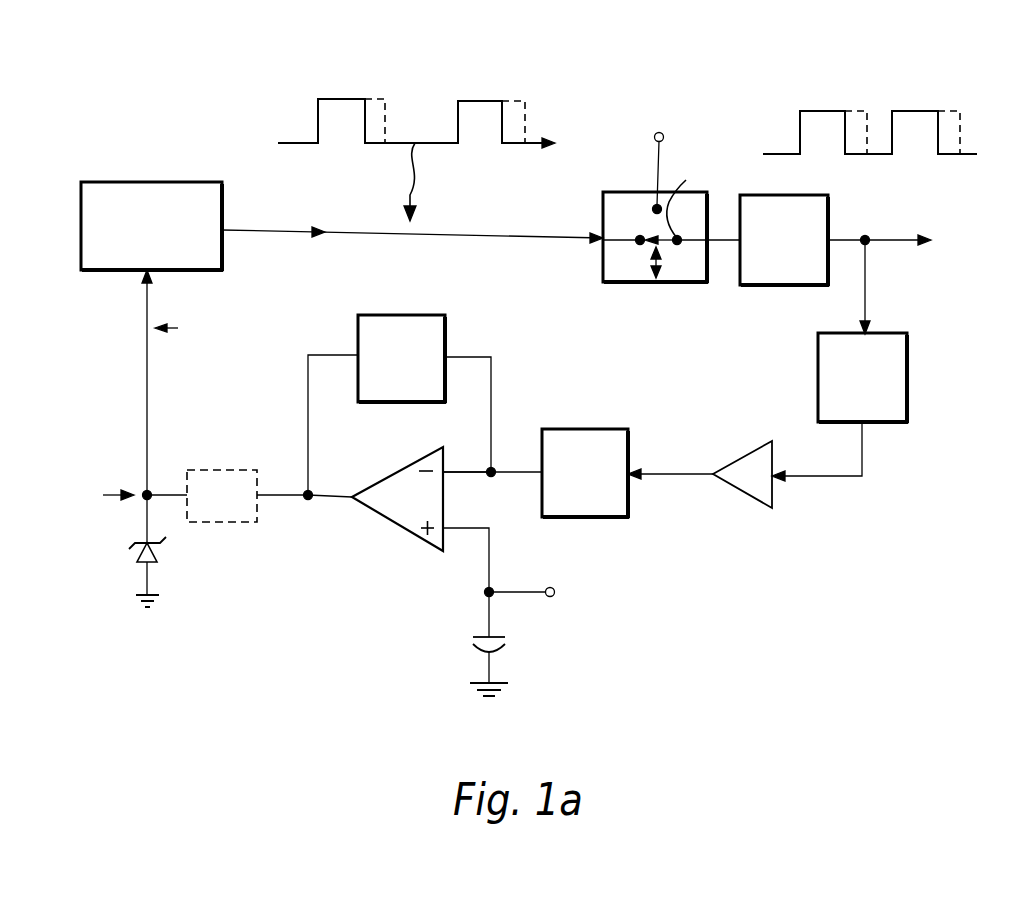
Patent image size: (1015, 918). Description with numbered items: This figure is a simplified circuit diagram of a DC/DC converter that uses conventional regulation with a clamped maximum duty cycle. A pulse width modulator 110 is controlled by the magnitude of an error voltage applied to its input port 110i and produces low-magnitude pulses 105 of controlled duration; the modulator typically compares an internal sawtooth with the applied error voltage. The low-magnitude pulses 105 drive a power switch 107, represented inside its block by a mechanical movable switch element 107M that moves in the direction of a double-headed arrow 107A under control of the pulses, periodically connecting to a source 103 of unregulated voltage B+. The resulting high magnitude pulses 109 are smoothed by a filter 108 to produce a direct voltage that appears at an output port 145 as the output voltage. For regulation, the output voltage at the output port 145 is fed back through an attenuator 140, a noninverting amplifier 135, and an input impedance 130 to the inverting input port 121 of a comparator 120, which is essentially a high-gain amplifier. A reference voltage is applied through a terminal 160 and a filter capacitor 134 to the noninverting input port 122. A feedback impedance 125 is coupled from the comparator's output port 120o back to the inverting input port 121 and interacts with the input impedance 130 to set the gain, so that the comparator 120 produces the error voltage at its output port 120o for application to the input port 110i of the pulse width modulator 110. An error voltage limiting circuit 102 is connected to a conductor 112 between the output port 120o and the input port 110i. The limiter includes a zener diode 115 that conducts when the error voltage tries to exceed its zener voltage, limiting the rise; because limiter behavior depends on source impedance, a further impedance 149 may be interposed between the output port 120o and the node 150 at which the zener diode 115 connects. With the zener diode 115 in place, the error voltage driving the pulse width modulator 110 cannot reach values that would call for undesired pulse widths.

The error voltage limiting circuit 102 is at (96, 510).
The source of unregulated voltage 103 is at (664, 137).
The low-magnitude pulses 105 is at (345, 99).
The power switch 107 is at (622, 285).
The movable switch element 107M is at (694, 195).
The double-headed arrow 107A is at (660, 268).
The filter 108 is at (778, 286).
The high magnitude pulses 109 is at (915, 111).
The pulse width modulator 110 is at (146, 182).
The input port 110i is at (142, 277).
The conductor 112 is at (150, 385).
The zener diode 115 is at (136, 556).
The comparator 120 is at (420, 548).
The output port 120o is at (352, 498).
The inverting input port 121 is at (468, 456).
The noninverting input port 122 is at (458, 509).
The feedback impedance 125 is at (400, 315).
The input impedance 130 is at (591, 429).
The filter capacitor 134 is at (506, 636).
The noninverting amplifier 135 is at (741, 456).
The attenuator 140 is at (907, 389).
The output port 145 is at (932, 243).
The further impedance 149 is at (236, 522).
The node 150 is at (150, 484).
The terminal 160 is at (556, 589).